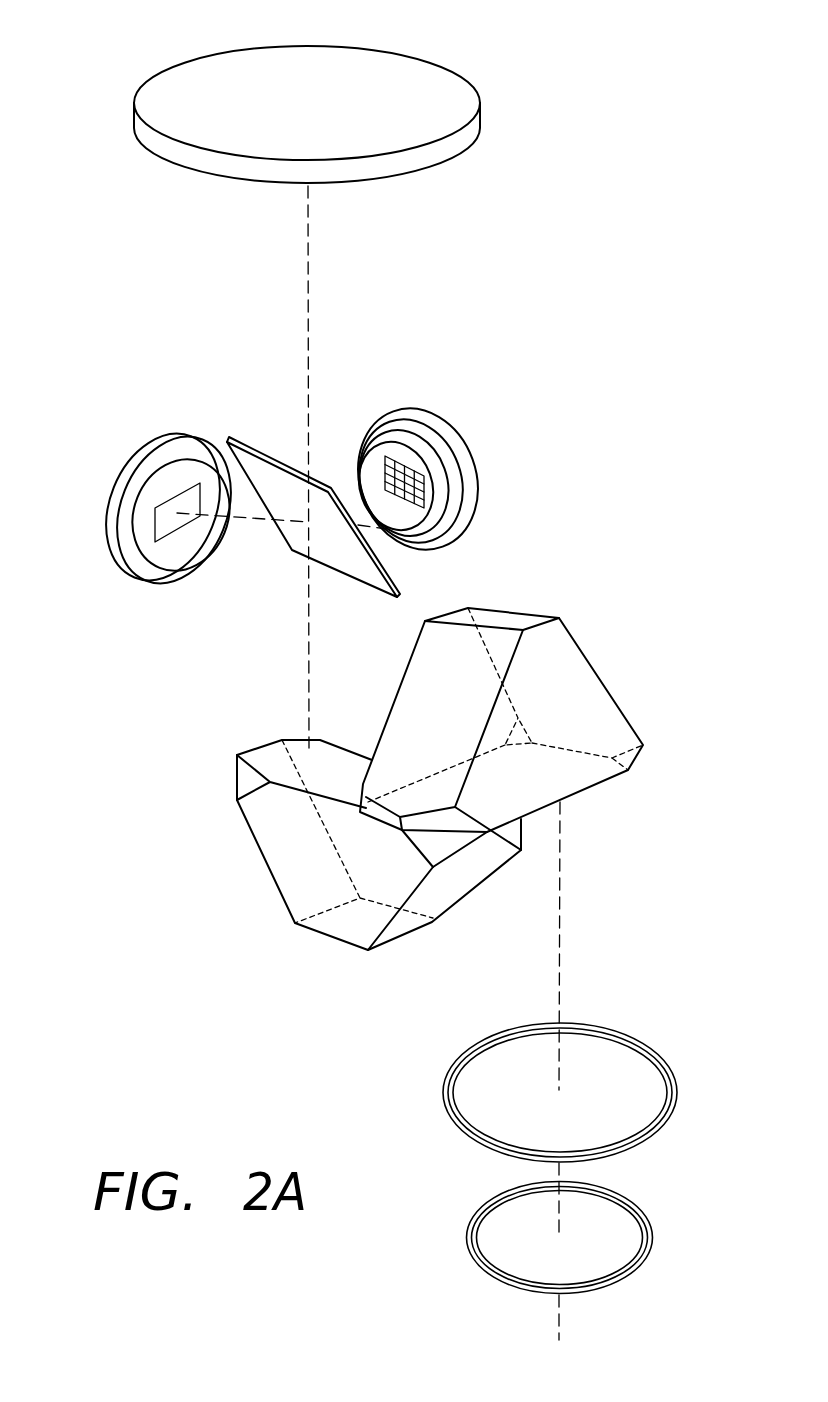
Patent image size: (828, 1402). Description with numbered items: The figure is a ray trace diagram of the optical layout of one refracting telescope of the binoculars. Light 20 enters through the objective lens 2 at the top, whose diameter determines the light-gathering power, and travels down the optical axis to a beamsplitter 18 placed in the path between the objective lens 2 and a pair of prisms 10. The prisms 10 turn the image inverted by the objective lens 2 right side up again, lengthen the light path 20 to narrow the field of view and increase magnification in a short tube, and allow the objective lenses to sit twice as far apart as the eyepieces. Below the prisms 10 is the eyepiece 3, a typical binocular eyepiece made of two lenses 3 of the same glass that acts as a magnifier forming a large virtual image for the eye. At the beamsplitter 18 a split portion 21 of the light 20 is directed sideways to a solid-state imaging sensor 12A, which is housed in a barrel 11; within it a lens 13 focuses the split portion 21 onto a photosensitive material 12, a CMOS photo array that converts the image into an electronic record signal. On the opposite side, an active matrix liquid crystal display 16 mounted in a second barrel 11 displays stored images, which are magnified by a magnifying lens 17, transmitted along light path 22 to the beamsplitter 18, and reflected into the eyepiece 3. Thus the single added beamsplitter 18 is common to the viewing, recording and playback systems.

The objective lens 2 is at (452, 69).
The eyepiece 3 is at (692, 1025).
The pair of prisms 10 is at (613, 697).
The lens barrel 11 is at (110, 503).
The photosensitive material 12 is at (387, 437).
The solid-state imaging sensor 12A is at (460, 463).
The lens 13 is at (408, 538).
The active matrix liquid crystal display 16 is at (172, 493).
The magnifying lens 17 is at (158, 574).
The beamsplitter 18 is at (335, 575).
The light 20 is at (309, 655).
The split portion of light 21 is at (332, 492).
The light path 22 is at (252, 523).